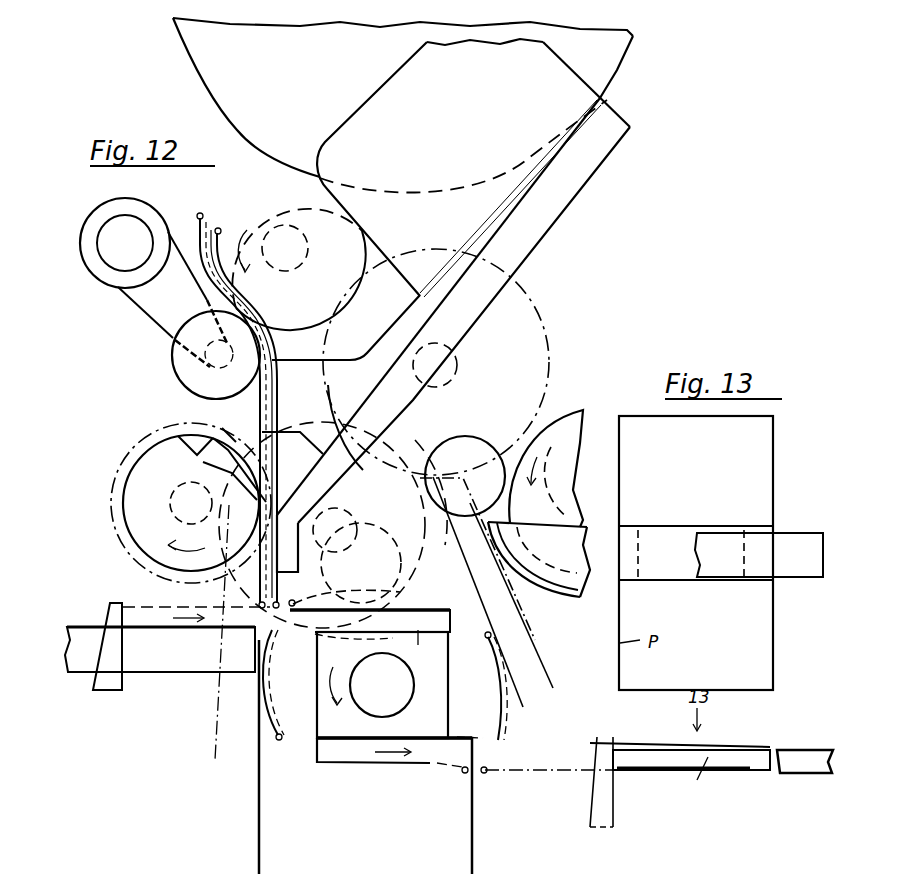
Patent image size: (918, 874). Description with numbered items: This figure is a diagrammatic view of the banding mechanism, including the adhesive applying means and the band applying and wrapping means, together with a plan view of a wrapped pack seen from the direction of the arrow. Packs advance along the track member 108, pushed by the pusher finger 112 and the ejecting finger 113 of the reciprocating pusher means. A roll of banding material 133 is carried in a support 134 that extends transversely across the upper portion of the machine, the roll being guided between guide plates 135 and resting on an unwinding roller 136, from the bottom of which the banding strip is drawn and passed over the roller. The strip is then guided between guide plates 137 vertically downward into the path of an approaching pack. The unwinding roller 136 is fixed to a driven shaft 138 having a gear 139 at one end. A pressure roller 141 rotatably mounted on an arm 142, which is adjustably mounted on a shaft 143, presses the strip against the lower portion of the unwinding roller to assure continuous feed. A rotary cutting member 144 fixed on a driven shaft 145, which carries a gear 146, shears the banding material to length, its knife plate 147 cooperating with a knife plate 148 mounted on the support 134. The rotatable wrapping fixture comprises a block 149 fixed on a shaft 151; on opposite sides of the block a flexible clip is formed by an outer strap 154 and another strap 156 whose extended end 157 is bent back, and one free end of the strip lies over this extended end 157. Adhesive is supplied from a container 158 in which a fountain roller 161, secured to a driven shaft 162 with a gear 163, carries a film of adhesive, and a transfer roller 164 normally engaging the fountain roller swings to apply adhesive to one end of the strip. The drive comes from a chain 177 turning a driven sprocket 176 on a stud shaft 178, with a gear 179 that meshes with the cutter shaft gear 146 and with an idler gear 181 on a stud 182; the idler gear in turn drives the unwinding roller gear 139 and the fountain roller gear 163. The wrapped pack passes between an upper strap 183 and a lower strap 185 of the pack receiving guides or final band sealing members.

In FIG. 12, the track member 108 is at (73, 625).
In FIG. 12, the pusher finger 112 is at (117, 603).
In FIG. 12, the ejecting finger 113 is at (583, 797).
In FIG. 12, the roll of banding material 133 is at (208, 90).
In FIG. 12, the support 134 is at (590, 177).
In FIG. 12, the guide plate 135 is at (363, 107).
In FIG. 12, the unwinding roller 136 is at (258, 172).
In FIG. 12, the guide plate 137 is at (290, 400).
In FIG. 12, the driven shaft 138 is at (285, 248).
In FIG. 12, the gear 139 is at (416, 288).
In FIG. 12, the pressure roller 141 is at (172, 362).
In FIG. 12, the arm 142 is at (140, 310).
In FIG. 12, the shaft 143 is at (138, 220).
In FIG. 12, the rotary cutting member 144 is at (128, 530).
In FIG. 12, the driven shaft 145 is at (173, 493).
In FIG. 12, the gear 146 is at (240, 578).
In FIG. 12, the knife plate 147 is at (212, 465).
In FIG. 12, the knife plate 148 is at (312, 468).
In FIG. 12, the block 149 is at (447, 698).
In FIG. 12, the shaft 151 is at (400, 658).
In FIG. 12, the outer strap 154 is at (296, 604).
In FIG. 12, the strap 156 is at (300, 635).
In FIG. 12, the extended end 157 is at (268, 720).
In FIG. 12, the adhesive container 158 is at (568, 590).
In FIG. 12, the fountain roller 161 is at (580, 410).
In FIG. 12, the driven shaft 162 is at (563, 455).
In FIG. 12, the gear 163 is at (557, 407).
In FIG. 12, the transfer roller 164 is at (470, 437).
In FIG. 12, the driven sprocket 176 is at (397, 437).
In FIG. 12, the chain 177 is at (527, 698).
In FIG. 12, the stud shaft 178 is at (358, 516).
In FIG. 12, the gear 179 is at (432, 477).
In FIG. 12, the idler gear 181 is at (527, 297).
In FIG. 12, the stud 182 is at (457, 363).
In FIG. 12, the upper strap 183 is at (595, 740).
In FIG. 13, the upper strap 183 is at (797, 533).
In FIG. 12, the lower strap 185 is at (523, 773).